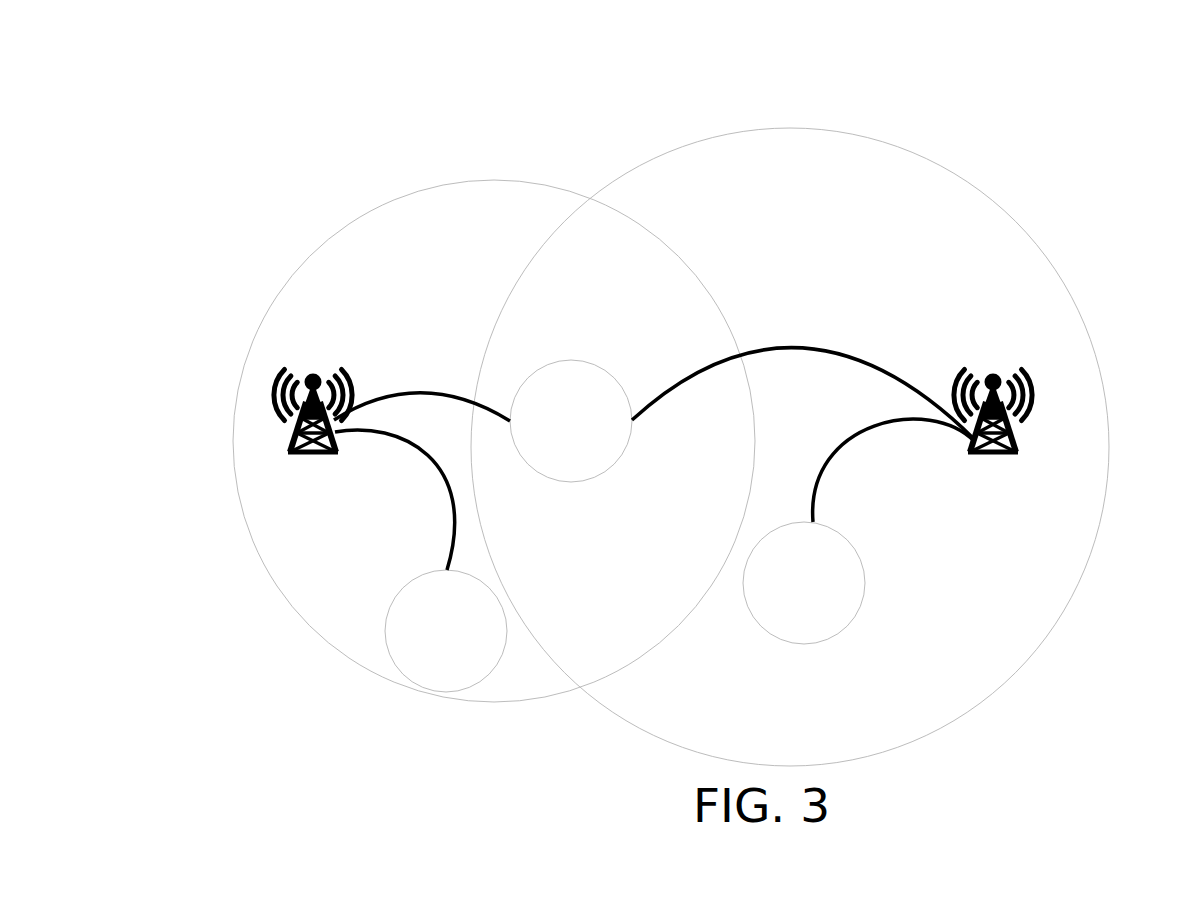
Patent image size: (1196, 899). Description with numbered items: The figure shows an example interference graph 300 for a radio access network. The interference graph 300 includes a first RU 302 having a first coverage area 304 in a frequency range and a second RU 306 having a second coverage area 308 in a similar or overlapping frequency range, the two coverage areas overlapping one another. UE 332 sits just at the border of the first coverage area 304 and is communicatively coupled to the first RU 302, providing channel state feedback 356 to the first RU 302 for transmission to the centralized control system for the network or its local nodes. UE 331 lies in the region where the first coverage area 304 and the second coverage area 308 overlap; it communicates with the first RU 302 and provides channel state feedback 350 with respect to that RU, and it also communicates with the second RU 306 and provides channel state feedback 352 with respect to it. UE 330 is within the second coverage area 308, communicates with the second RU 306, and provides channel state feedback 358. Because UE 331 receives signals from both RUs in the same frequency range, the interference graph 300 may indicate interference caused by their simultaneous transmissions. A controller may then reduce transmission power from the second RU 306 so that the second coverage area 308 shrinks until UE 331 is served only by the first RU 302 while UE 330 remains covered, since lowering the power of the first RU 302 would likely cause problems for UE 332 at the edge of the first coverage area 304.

The interference graph 300 is at (596, 108).
The first RU 302 is at (314, 376).
The first coverage area 304 is at (371, 211).
The second RU 306 is at (996, 376).
The second coverage area 308 is at (1004, 218).
The UE 330 is at (785, 608).
The UE 331 is at (552, 446).
The UE 332 is at (427, 656).
The channel state feedback 350 is at (422, 396).
The channel state feedback 352 is at (803, 381).
The channel state feedback 356 is at (396, 496).
The channel state feedback 358 is at (894, 465).